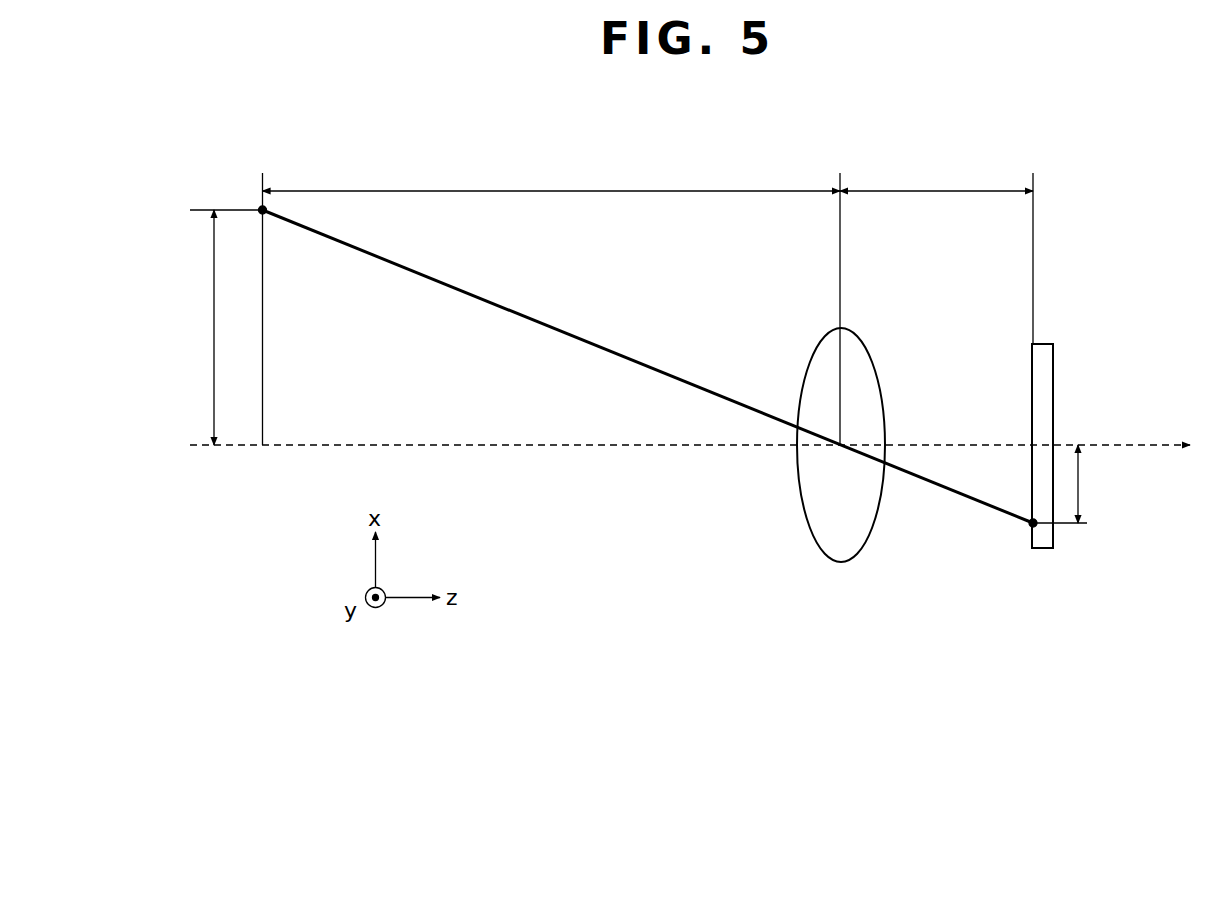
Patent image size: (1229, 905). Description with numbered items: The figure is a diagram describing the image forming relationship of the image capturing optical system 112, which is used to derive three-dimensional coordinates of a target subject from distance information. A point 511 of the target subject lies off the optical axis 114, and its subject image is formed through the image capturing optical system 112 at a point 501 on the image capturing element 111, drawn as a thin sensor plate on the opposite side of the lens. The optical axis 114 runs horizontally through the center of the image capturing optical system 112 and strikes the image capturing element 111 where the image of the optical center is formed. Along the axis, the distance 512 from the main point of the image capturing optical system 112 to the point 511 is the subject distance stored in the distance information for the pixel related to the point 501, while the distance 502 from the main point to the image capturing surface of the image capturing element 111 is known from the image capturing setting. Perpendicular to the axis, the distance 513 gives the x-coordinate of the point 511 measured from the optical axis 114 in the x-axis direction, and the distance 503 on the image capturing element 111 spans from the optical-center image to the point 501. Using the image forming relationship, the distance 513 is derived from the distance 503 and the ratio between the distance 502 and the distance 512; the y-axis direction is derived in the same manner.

The image capturing element 111 is at (1054, 366).
The image capturing optical system 112 is at (841, 563).
The optical axis 114 is at (1150, 444).
The point on the image capturing element 501 is at (1030, 526).
The distance from the main point to the image capturing surface 502 is at (936, 190).
The distance from the optical center image to the point on the element 503 is at (1080, 484).
The point of the target subject 511 is at (258, 206).
The distance from the main point to the subject point 512 is at (551, 190).
The distance from the optical axis in the x-axis direction 513 is at (212, 326).